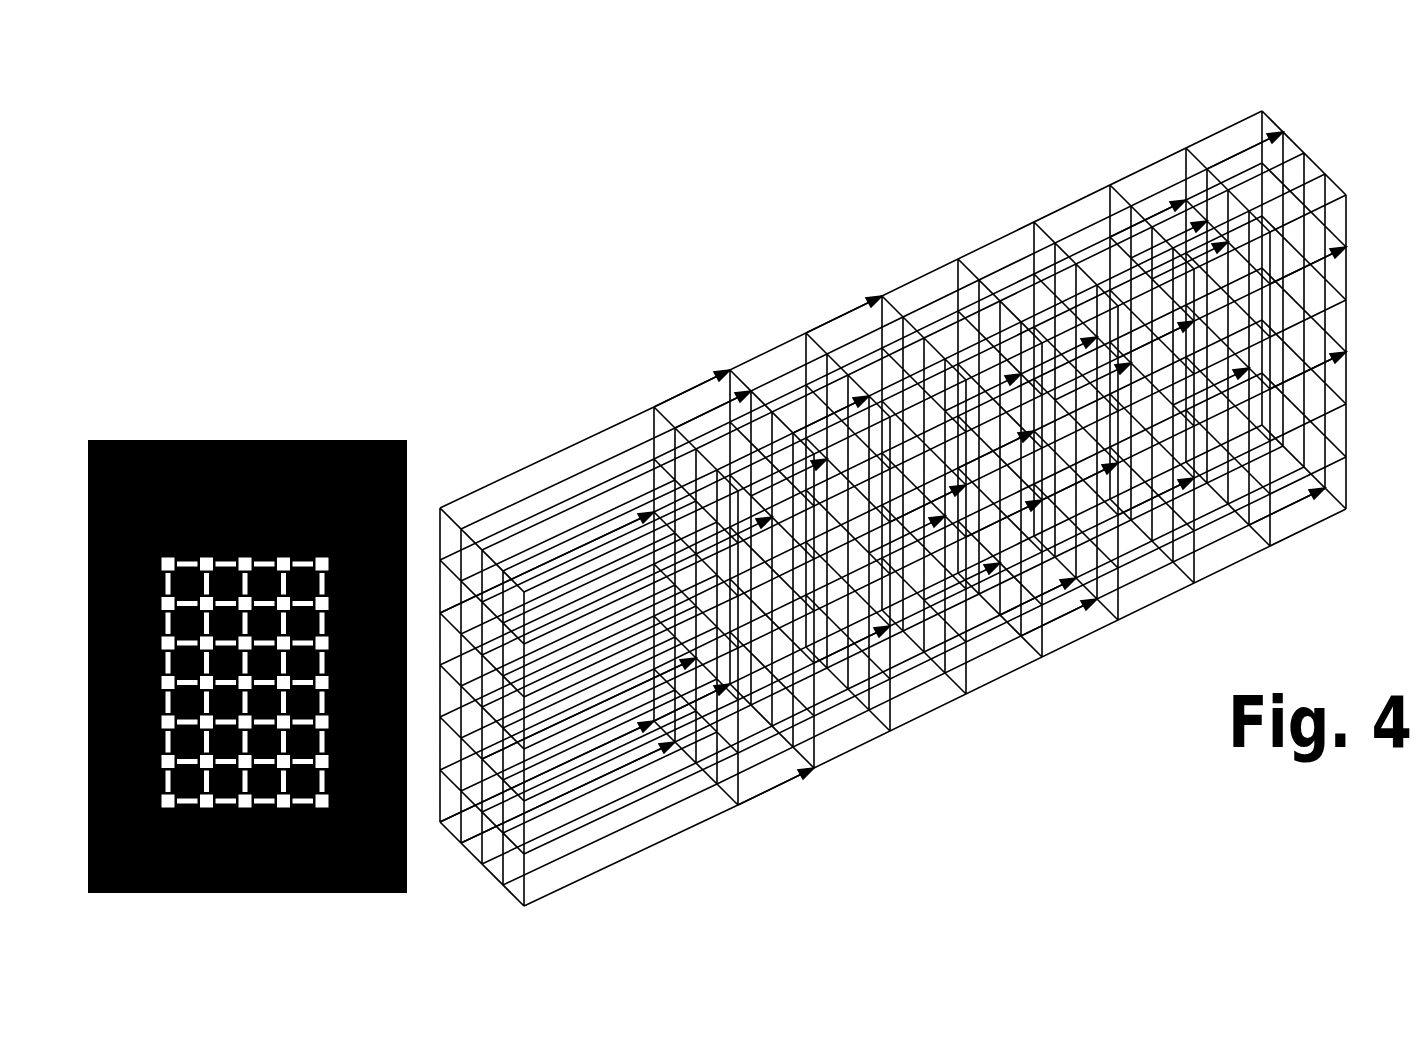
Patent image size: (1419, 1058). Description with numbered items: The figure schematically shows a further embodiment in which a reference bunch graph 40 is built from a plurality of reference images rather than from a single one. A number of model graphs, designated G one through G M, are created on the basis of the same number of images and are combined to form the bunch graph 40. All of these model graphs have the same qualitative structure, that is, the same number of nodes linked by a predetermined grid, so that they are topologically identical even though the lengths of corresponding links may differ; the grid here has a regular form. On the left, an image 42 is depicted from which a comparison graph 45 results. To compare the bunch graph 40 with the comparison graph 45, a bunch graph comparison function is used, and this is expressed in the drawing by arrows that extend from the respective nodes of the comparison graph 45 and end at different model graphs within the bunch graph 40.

The bunch graph 40 is at (913, 463).
The image 42 is at (250, 425).
The comparison graph 45 is at (472, 553).